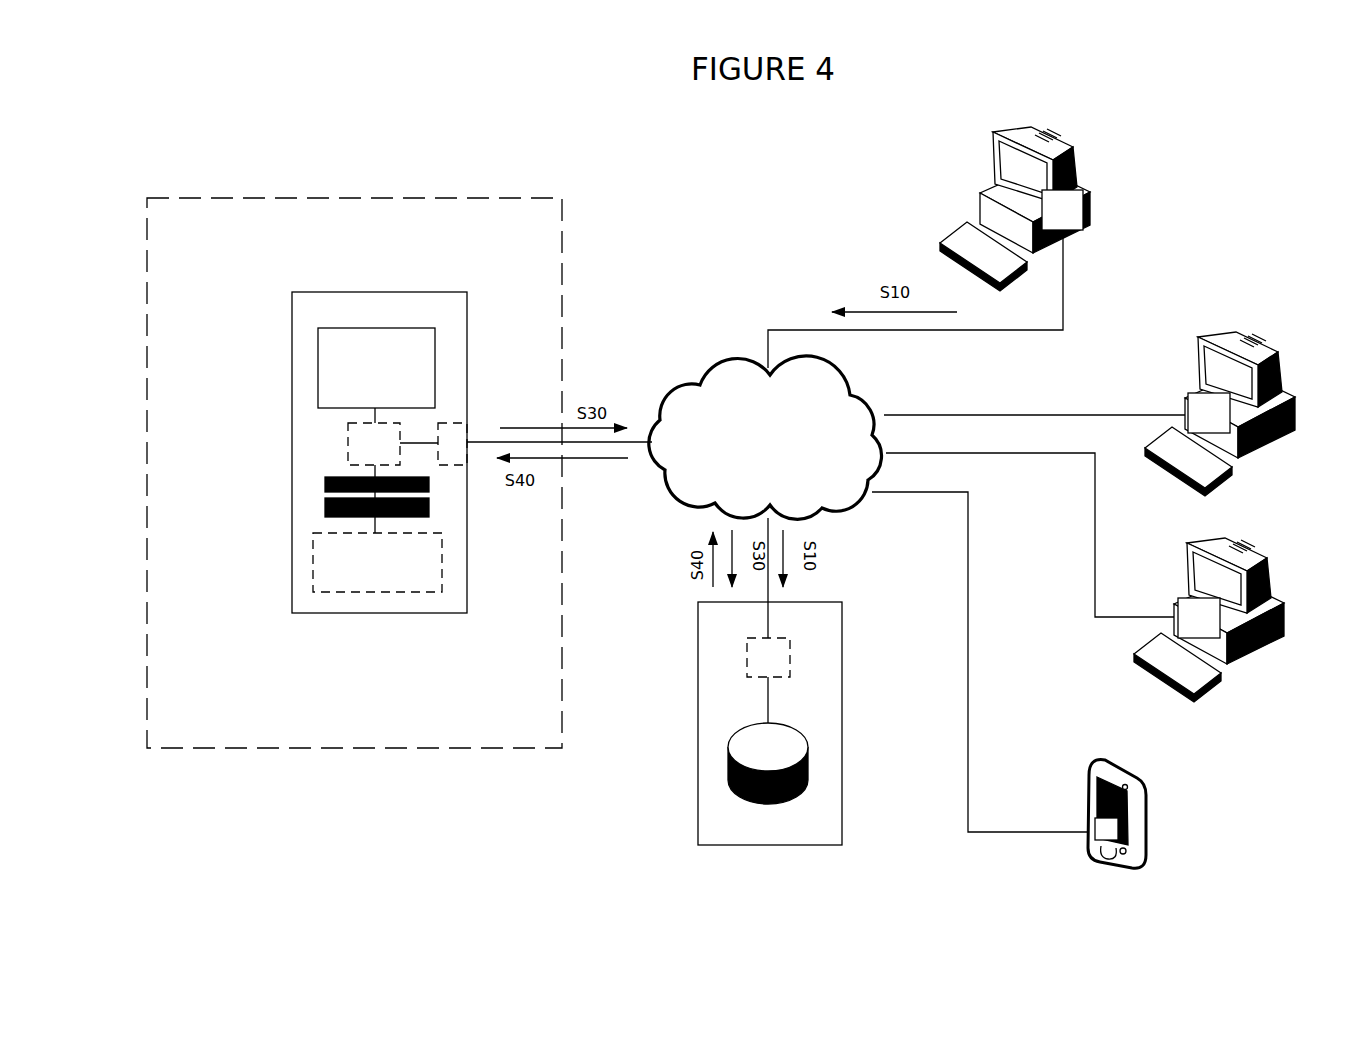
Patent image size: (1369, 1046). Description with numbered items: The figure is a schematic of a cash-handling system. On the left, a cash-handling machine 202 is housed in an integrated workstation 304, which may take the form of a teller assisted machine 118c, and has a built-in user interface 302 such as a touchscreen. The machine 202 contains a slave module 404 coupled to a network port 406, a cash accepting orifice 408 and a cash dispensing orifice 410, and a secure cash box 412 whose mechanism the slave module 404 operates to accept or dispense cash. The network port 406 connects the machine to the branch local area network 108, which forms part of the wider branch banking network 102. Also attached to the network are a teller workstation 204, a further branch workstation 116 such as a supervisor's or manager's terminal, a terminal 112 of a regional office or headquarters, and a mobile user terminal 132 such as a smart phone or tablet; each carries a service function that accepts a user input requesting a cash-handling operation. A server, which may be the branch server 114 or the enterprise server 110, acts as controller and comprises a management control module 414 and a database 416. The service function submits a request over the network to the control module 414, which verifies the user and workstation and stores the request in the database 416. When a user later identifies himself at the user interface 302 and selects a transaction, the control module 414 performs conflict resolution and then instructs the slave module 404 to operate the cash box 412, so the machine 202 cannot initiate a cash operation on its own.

The cash-handling machine 202 is at (363, 292).
The built-in user interface 302 is at (318, 372).
The integrated workstation 304 is at (354, 507).
The teller assisted machine 118c is at (300, 750).
The slave module 404 is at (348, 440).
The network port 406 is at (452, 423).
The cash accepting orifice 408 is at (325, 484).
The cash dispensing orifice 410 is at (325, 508).
The secure cash box 412 is at (363, 593).
The local area network 108 is at (765, 397).
The branch banking network 102 is at (728, 364).
The teller workstation 204 is at (1058, 140).
The further branch workstation 116 is at (1263, 350).
The terminal 112 is at (1255, 556).
The mobile user terminal 132 is at (1127, 760).
The branch server 114 is at (715, 723).
The enterprise server 110 is at (698, 778).
The management control module 414 is at (747, 656).
The database 416 is at (800, 728).